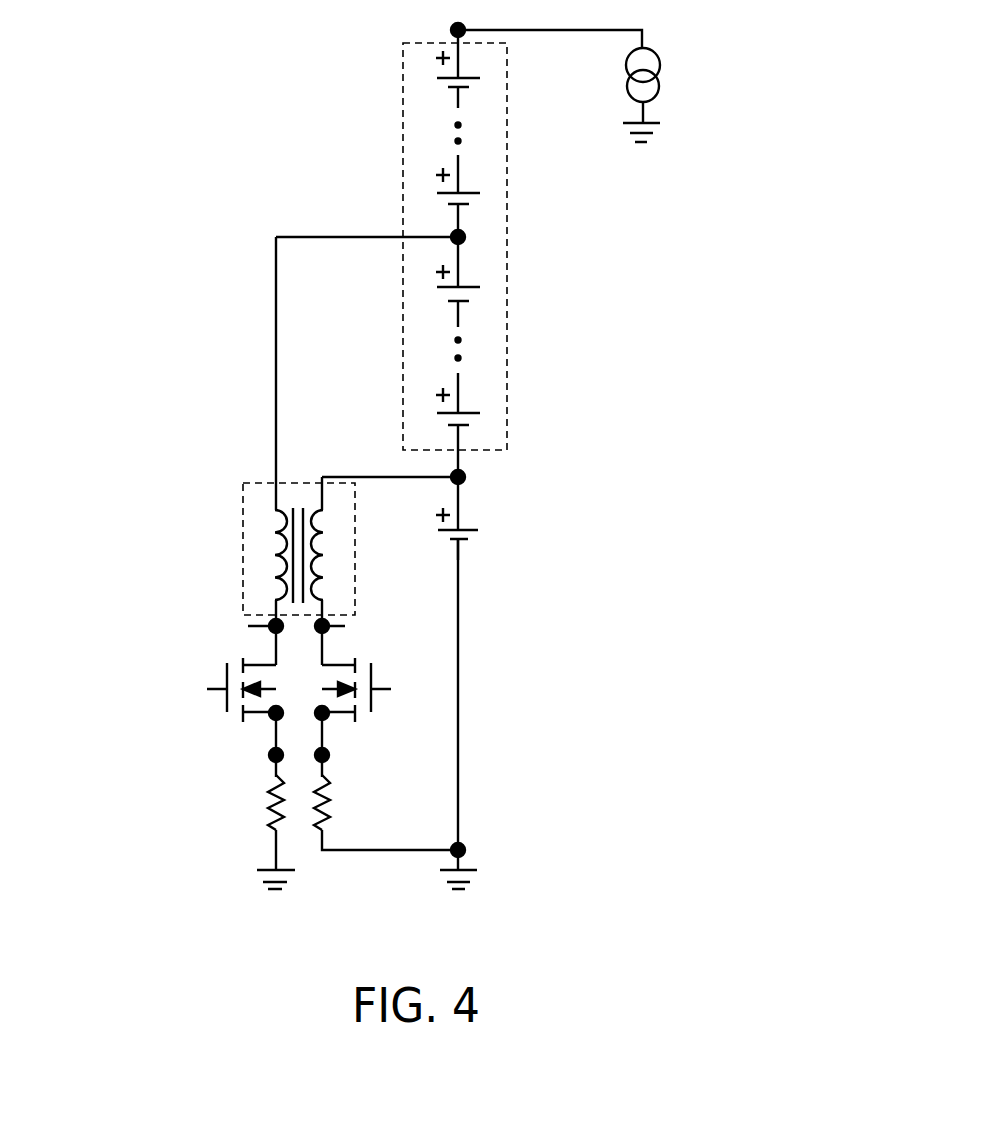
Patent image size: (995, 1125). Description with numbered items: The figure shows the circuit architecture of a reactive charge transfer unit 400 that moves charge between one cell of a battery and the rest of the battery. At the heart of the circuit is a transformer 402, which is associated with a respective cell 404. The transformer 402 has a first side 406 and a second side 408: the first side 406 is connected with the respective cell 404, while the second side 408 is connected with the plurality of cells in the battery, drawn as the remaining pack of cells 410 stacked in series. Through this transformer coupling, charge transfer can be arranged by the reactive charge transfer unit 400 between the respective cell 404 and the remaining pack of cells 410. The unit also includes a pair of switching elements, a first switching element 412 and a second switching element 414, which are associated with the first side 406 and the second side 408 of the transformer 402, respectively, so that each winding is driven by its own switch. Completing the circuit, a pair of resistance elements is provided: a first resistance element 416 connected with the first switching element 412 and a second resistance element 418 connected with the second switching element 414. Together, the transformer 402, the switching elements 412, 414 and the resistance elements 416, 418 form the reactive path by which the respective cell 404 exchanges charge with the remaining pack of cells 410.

The reactive charge transfer unit 400 is at (132, 420).
The transformer 402 is at (331, 549).
The respective cell 404 is at (473, 528).
The first side 406 is at (312, 597).
The second side 408 is at (283, 555).
The remaining pack of cells 410 is at (507, 302).
The first switching element 412 is at (372, 680).
The second switching element 414 is at (227, 703).
The first resistance element 416 is at (327, 802).
The second resistance element 418 is at (270, 812).